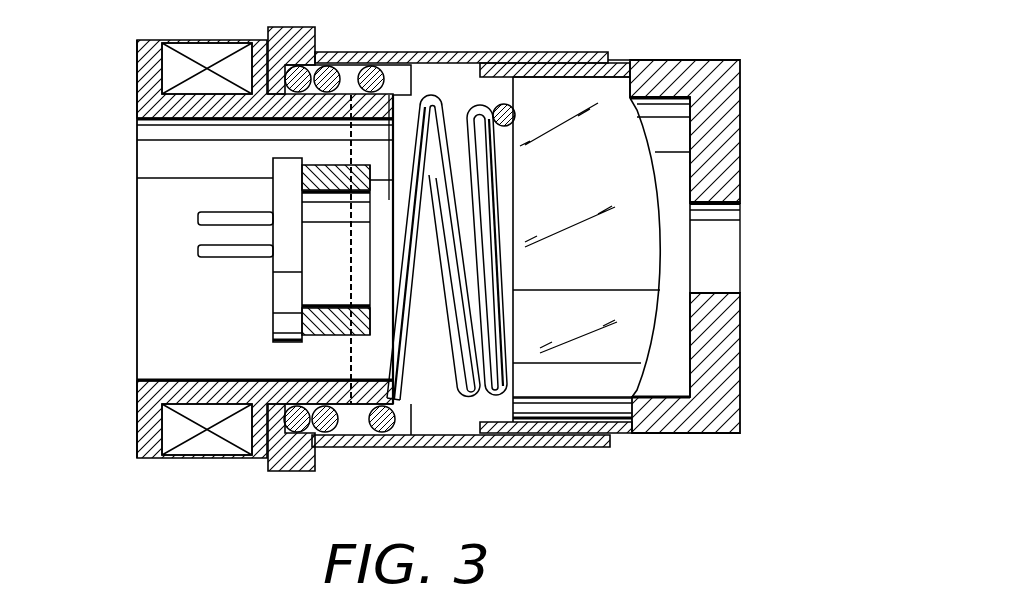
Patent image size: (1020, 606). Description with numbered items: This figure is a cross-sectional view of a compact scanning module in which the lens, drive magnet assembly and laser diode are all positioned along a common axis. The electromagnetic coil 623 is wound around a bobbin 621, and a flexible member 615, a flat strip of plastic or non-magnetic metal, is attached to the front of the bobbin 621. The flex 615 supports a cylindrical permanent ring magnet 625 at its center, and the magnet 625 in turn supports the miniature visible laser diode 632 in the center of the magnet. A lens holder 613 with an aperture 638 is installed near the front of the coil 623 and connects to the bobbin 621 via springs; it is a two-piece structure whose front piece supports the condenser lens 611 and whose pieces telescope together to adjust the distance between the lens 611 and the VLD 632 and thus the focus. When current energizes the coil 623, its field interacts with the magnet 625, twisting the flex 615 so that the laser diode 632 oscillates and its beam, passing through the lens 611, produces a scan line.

The condenser lens 611 is at (655, 152).
The lens holder 613 is at (707, 60).
The flexible member 615 is at (352, 145).
The bobbin 621 is at (180, 380).
The electromagnetic coil 623 is at (197, 457).
The permanent ring magnet 625 is at (323, 337).
The visible laser diode 632 is at (268, 185).
The aperture 638 is at (715, 262).